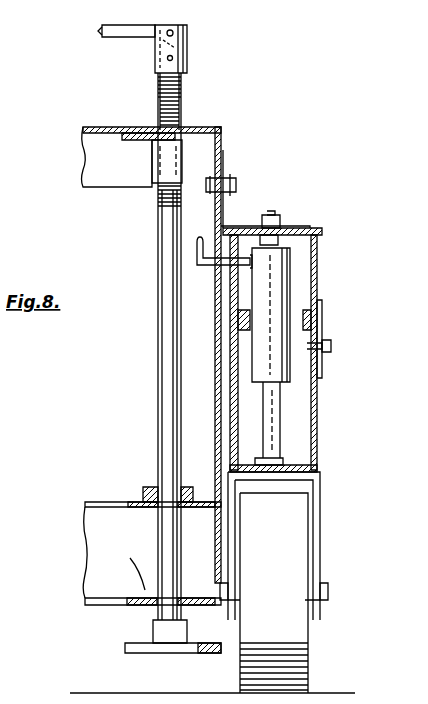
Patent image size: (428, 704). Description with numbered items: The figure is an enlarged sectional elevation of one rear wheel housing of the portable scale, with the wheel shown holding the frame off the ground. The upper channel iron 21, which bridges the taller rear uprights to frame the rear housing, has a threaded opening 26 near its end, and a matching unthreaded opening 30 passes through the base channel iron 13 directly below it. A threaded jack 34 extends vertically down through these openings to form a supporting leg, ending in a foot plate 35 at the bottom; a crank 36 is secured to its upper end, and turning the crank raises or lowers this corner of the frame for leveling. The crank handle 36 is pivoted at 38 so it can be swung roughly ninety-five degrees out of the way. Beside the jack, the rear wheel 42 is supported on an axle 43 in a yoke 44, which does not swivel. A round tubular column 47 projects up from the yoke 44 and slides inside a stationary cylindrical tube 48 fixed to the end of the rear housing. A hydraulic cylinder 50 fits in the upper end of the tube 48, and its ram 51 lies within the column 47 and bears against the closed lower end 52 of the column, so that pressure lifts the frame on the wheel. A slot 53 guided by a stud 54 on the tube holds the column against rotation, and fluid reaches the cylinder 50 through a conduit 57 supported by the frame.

The channel iron 13 is at (115, 502).
The channel iron 21 is at (83, 157).
The threaded opening 26 is at (160, 127).
The unthreaded opening 30 is at (158, 507).
The threaded jack 34 is at (181, 110).
The foot plate 35 is at (150, 647).
The crank 36 is at (132, 37).
The pivot 38 is at (184, 31).
The wheel 42 is at (308, 655).
The axle 43 is at (313, 578).
The yoke 44 is at (328, 600).
The tubular column 47 is at (318, 427).
The stationary cylindrical tube 48 is at (318, 264).
The hydraulic cylinder 50 is at (290, 298).
The ram 51 is at (285, 462).
The closed lower end 52 is at (272, 472).
The slot 53 is at (322, 382).
The stud 54 is at (331, 345).
The conduit 57 is at (200, 262).